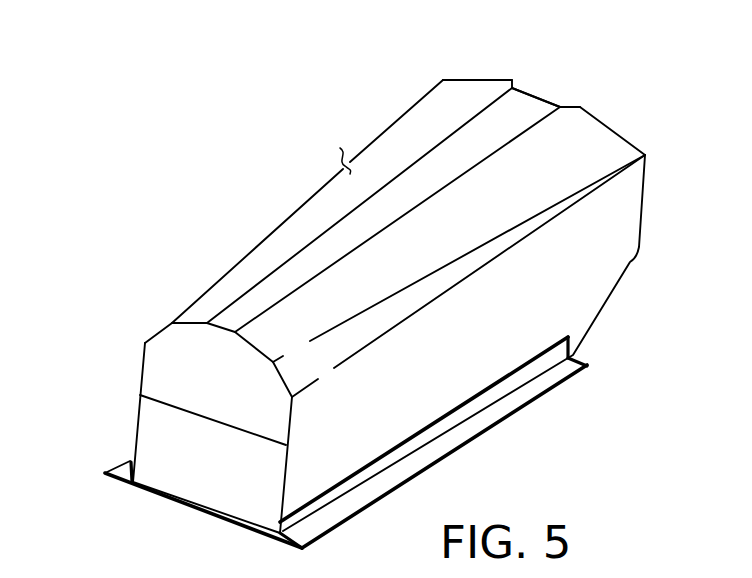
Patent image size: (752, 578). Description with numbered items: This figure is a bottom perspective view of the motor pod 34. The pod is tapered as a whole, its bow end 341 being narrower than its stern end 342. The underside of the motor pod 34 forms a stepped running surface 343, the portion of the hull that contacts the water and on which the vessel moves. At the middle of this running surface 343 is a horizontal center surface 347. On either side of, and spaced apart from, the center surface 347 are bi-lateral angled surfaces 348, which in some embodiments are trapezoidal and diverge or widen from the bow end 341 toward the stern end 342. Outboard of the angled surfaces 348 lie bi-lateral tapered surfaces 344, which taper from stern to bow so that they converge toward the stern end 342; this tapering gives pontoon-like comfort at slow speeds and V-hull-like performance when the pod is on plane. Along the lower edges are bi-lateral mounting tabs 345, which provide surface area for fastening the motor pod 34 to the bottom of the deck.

The motor pod 34 is at (346, 274).
The bow end 341 is at (123, 382).
The stern end 342 is at (567, 90).
The stepped running surface 343 is at (392, 104).
The bi-lateral tapered surfaces 344 is at (330, 373).
The bi-lateral mounting tabs 345 is at (122, 468).
The horizontal center surface 347 is at (538, 127).
The bi-lateral angled surfaces 348 is at (478, 112).